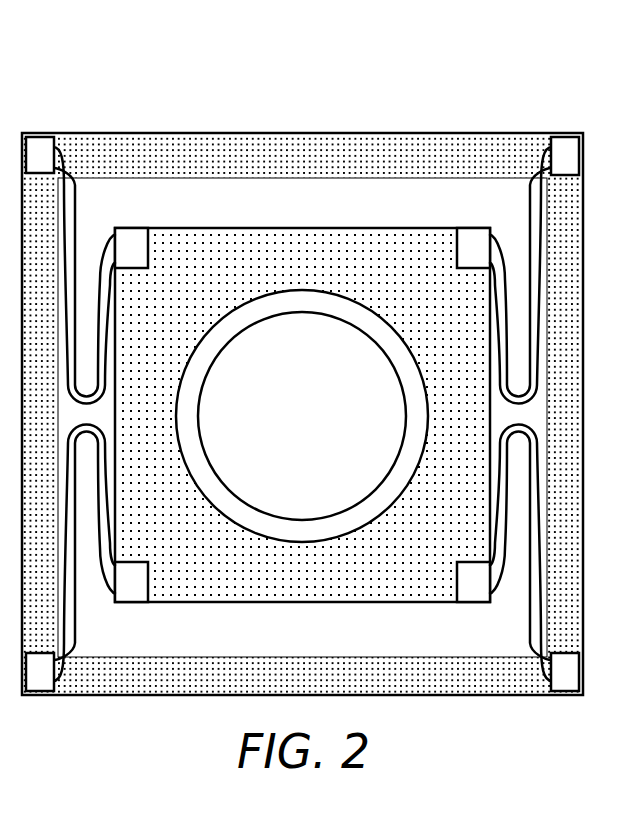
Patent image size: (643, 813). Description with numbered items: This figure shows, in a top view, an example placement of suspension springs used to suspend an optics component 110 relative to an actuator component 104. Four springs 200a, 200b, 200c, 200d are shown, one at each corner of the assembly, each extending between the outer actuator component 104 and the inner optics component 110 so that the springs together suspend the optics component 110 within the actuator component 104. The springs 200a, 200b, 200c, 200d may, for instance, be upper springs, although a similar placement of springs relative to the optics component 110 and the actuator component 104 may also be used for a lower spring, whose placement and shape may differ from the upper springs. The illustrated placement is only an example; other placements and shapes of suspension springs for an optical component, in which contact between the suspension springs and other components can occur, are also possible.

The actuator component 104 is at (396, 142).
The optics component 110 is at (277, 243).
The spring 200a is at (71, 133).
The spring 200b is at (567, 155).
The spring 200c is at (35, 678).
The spring 200d is at (562, 670).